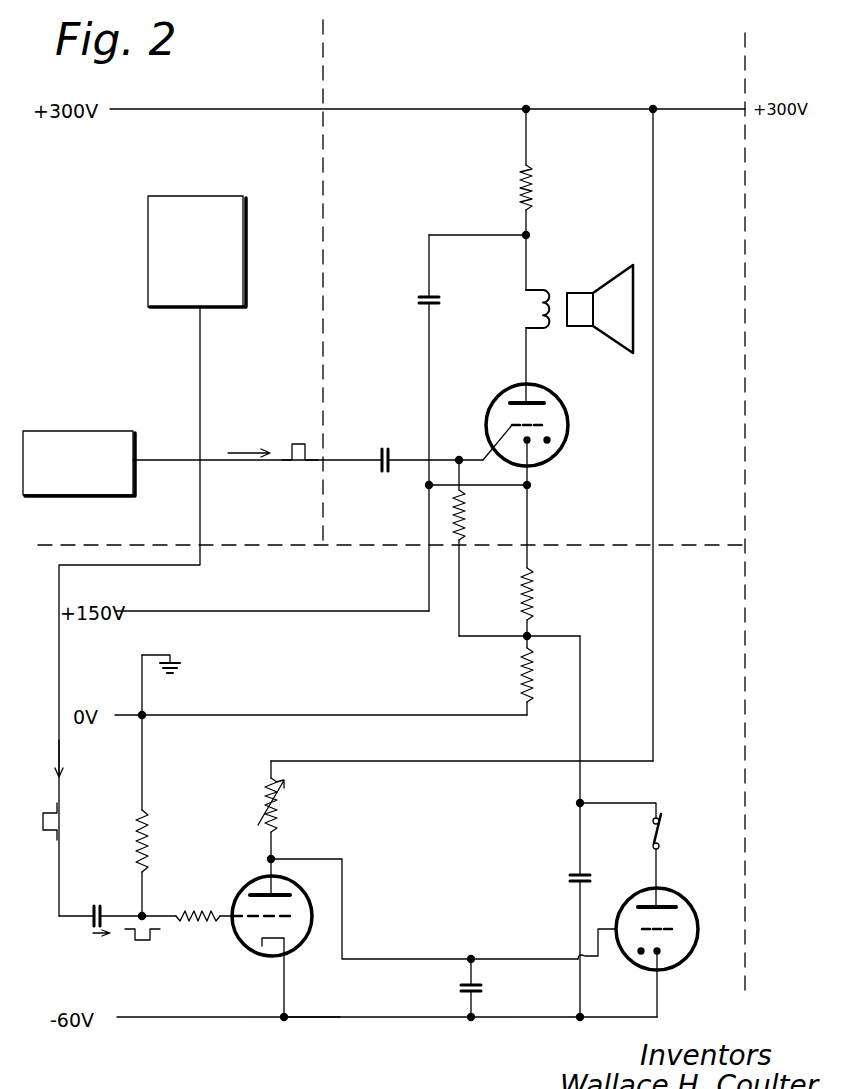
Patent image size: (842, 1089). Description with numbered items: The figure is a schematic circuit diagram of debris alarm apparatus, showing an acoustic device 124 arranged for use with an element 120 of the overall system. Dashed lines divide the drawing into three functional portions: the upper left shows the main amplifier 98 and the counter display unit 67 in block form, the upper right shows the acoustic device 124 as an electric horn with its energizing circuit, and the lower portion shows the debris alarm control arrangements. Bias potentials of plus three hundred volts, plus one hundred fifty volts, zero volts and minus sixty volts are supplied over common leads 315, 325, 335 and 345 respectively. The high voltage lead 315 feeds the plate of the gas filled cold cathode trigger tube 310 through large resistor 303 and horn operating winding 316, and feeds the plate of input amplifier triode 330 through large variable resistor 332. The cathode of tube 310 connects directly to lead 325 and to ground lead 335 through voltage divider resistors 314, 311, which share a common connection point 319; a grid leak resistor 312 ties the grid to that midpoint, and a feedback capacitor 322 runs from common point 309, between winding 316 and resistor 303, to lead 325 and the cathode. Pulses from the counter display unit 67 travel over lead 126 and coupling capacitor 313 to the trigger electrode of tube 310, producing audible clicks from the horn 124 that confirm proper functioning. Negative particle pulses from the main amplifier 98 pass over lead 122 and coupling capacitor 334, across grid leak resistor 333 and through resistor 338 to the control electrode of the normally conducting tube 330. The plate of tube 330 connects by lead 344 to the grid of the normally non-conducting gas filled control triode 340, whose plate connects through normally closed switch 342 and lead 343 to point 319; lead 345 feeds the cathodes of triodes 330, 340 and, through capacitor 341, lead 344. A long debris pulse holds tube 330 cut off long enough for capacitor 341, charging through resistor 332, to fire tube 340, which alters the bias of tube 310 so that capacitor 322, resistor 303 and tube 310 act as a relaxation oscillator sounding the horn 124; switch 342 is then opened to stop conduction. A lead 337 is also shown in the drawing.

The counter display unit 67 is at (88, 431).
The main amplifier 98 is at (180, 196).
The element 120 is at (308, 1030).
The lead 122 is at (198, 368).
The acoustic device 124 is at (653, 334).
The lead 126 is at (166, 461).
The plate resistor 303 is at (538, 200).
The common point 309 is at (532, 235).
The gas filled triode cold cathode trigger tube 310 is at (568, 447).
The voltage divider resistor 311 is at (520, 693).
The grid leak resistor 312 is at (464, 521).
The coupling capacitor 313 is at (378, 472).
The voltage divider resistor 314 is at (538, 606).
The high voltage lead 315 is at (345, 109).
The horn operating winding 316 is at (548, 296).
The common connection point 319 is at (522, 642).
The feedback capacitor 322 is at (422, 300).
The lead 325 is at (228, 588).
The input amplifier triode 330 is at (250, 950).
The variable resistor 332 is at (282, 805).
The grid leak resistor 333 is at (136, 840).
The coupling capacitor 334 is at (95, 928).
The ground lead 335 is at (357, 697).
The conductor 337 is at (405, 761).
The resistor 338 is at (198, 912).
The gas filled control triode 340 is at (630, 962).
The capacitor 341 is at (482, 990).
The switch 342 is at (664, 832).
The lead 343 is at (658, 812).
The lead 344 is at (480, 955).
The lead 345 is at (360, 1019).